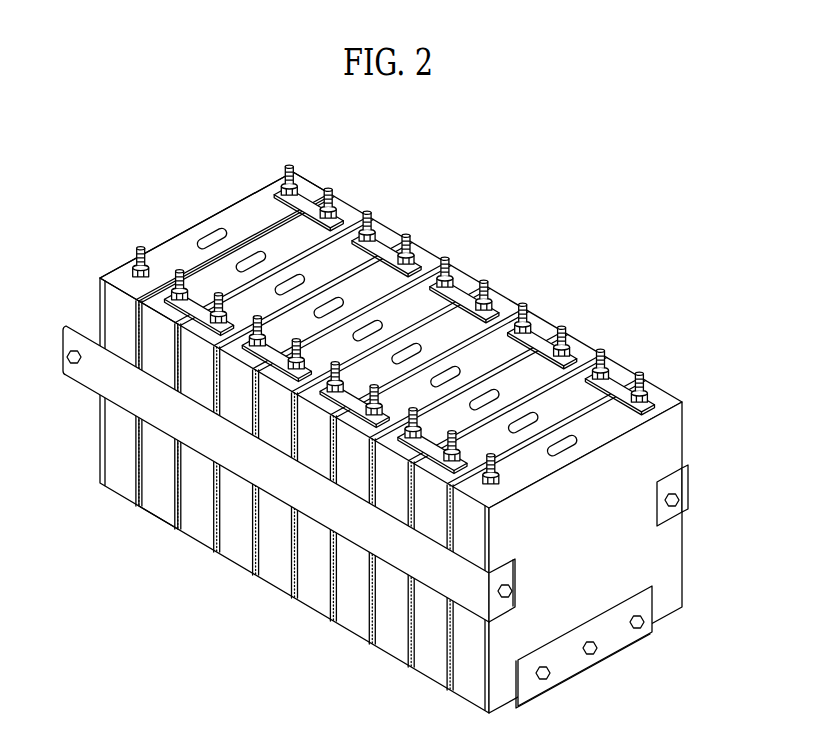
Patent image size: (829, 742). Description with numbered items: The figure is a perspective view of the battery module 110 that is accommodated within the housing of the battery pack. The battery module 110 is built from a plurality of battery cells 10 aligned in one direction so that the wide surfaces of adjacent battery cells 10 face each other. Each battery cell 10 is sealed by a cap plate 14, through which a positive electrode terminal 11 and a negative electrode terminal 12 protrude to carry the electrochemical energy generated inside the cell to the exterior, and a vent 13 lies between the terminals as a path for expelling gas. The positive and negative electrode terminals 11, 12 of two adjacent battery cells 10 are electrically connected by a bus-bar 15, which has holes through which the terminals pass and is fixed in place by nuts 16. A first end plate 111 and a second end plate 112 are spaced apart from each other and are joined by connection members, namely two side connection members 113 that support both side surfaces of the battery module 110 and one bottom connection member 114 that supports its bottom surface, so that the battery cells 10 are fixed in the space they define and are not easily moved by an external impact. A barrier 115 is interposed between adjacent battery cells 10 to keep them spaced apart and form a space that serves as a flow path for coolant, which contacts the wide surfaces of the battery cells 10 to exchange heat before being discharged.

The battery cell 10 is at (158, 452).
The positive electrode terminal 11 is at (288, 163).
The negative electrode terminal 12 is at (140, 252).
The vent 13 is at (210, 240).
The cap plate 14 is at (247, 207).
The bus-bar 15 is at (613, 377).
The nut 16 is at (563, 343).
The battery module 110 is at (614, 230).
The first end plate 111 is at (486, 663).
The second end plate 112 is at (100, 430).
The side connection member 113 is at (694, 494).
The bottom connection member 114 is at (610, 636).
The barrier 115 is at (290, 563).